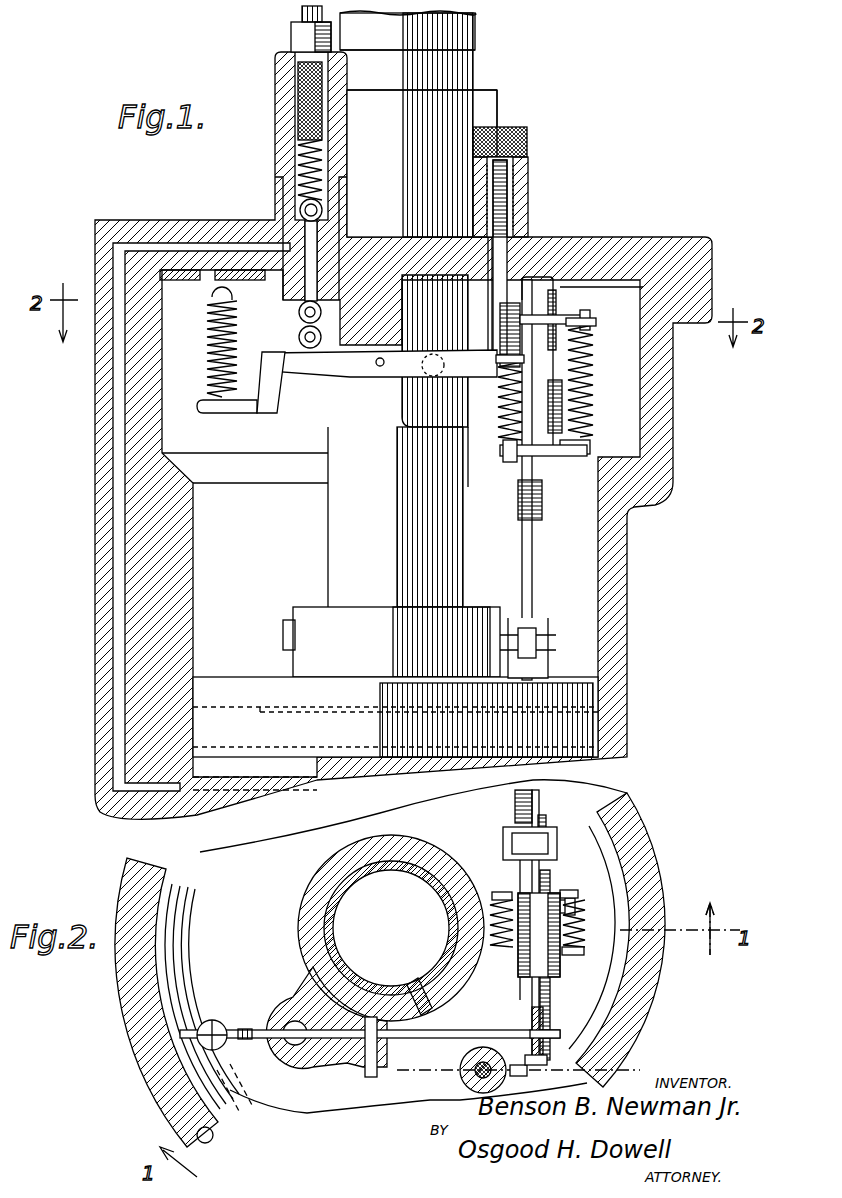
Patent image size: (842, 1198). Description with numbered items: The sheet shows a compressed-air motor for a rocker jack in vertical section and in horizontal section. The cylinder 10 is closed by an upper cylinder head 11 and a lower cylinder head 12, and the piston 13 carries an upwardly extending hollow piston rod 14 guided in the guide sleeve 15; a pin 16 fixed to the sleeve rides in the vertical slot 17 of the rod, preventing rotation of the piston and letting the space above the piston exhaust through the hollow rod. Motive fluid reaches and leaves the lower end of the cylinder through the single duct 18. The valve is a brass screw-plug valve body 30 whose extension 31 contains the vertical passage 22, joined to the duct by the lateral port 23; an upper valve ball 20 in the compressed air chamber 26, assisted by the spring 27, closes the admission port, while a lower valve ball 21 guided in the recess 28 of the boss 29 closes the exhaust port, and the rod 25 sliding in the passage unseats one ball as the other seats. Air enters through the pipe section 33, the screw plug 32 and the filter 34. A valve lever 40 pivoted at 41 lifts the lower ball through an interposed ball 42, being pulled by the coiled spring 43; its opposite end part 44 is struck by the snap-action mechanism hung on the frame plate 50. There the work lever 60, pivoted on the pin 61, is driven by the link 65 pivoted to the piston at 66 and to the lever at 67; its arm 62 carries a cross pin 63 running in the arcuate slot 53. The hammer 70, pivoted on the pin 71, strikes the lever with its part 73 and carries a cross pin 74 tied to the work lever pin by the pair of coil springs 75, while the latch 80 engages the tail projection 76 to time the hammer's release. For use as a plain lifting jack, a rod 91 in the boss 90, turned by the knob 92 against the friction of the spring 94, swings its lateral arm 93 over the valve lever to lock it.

In FIG. 1, the cylinder 10 is at (628, 600).
In FIG. 2, the cylinder 10 is at (652, 864).
In FIG. 1, the upper cylinder head 11 is at (706, 250).
In FIG. 1, the lower cylinder head 12 is at (182, 814).
In FIG. 1, the piston 13 is at (316, 702).
In FIG. 2, the piston 13 is at (281, 842).
In FIG. 1, the piston rod 14 is at (335, 517).
In FIG. 2, the piston rod 14 is at (332, 882).
In FIG. 1, the guide sleeve 15 is at (320, 422).
In FIG. 2, the guide sleeve 15 is at (300, 905).
In FIG. 1, the pin 16 is at (388, 422).
In FIG. 2, the pin 16 is at (416, 988).
In FIG. 1, the vertical slot 17 is at (408, 532).
In FIG. 2, the vertical slot 17 is at (437, 1005).
In FIG. 1, the duct 18 is at (116, 574).
In FIG. 2, the duct 18 is at (198, 1134).
In FIG. 1, the upper valve ball 20 is at (300, 212).
In FIG. 1, the lower valve ball 21 is at (298, 335).
In FIG. 1, the vertical passage 22 is at (340, 245).
In FIG. 1, the lateral port 23 is at (304, 240).
In FIG. 1, the rod 25 is at (336, 262).
In FIG. 1, the chamber 26 is at (345, 190).
In FIG. 1, the spring 27 is at (348, 142).
In FIG. 1, the recess 28 is at (272, 375).
In FIG. 2, the recess 28 is at (286, 1012).
In FIG. 1, the boss 29 is at (383, 300).
In FIG. 2, the boss 29 is at (294, 1065).
In FIG. 1, the valve body 30 is at (276, 86).
In FIG. 1, the extension 31 is at (298, 308).
In FIG. 1, the screw plug 32 is at (292, 40).
In FIG. 1, the pipe section 33 is at (302, 11).
In FIG. 1, the filter 34 is at (298, 112).
In FIG. 1, the valve lever 40 is at (337, 379).
In FIG. 2, the valve lever 40 is at (430, 1040).
In FIG. 1, the pivot 41 is at (380, 368).
In FIG. 2, the pivot 41 is at (371, 1078).
In FIG. 1, the interposed ball 42 is at (322, 378).
In FIG. 1, the spring 43 is at (207, 345).
In FIG. 2, the spring 43 is at (208, 1022).
In FIG. 1, the end part of valve lever 44 is at (594, 380).
In FIG. 2, the end part of valve lever 44 is at (561, 1037).
In FIG. 1, the frame plate 50 is at (548, 300).
In FIG. 2, the frame plate 50 is at (546, 842).
In FIG. 2, the arcuate slot 53 is at (530, 1002).
In FIG. 1, the work lever 60 is at (540, 483).
In FIG. 2, the work lever 60 is at (520, 868).
In FIG. 1, the pin 61 is at (590, 406).
In FIG. 2, the pin 61 is at (553, 975).
In FIG. 1, the arm 62 is at (503, 300).
In FIG. 2, the arm 62 is at (549, 895).
In FIG. 1, the cross pin 63 is at (588, 314).
In FIG. 2, the cross pin 63 is at (572, 903).
In FIG. 1, the link 65 is at (533, 560).
In FIG. 2, the link 65 is at (531, 830).
In FIG. 1, the pivot 66 is at (540, 628).
In FIG. 2, the pivot 66 is at (505, 838).
In FIG. 1, the pivot 67 is at (543, 508).
In FIG. 2, the pivot 67 is at (542, 800).
In FIG. 1, the hammer 70 is at (592, 438).
In FIG. 2, the hammer 70 is at (560, 992).
In FIG. 1, the pin 71 is at (520, 470).
In FIG. 2, the pin 71 is at (560, 976).
In FIG. 1, the striking part of hammer 73 is at (500, 404).
In FIG. 2, the striking part of hammer 73 is at (556, 1016).
In FIG. 2, the cross pin 74 is at (586, 926).
In FIG. 1, the coil springs 75 is at (594, 397).
In FIG. 2, the coil springs 75 is at (586, 940).
In FIG. 2, the tail projection 76 is at (578, 902).
In FIG. 1, the latch 80 is at (556, 320).
In FIG. 2, the latch 80 is at (560, 880).
In FIG. 1, the boss 90 is at (529, 196).
In FIG. 1, the rod 91 is at (508, 180).
In FIG. 2, the rod 91 is at (460, 1070).
In FIG. 1, the knob 92 is at (528, 140).
In FIG. 1, the lateral arm 93 is at (418, 350).
In FIG. 2, the lateral arm 93 is at (545, 1060).
In FIG. 1, the spring 94 is at (520, 214).